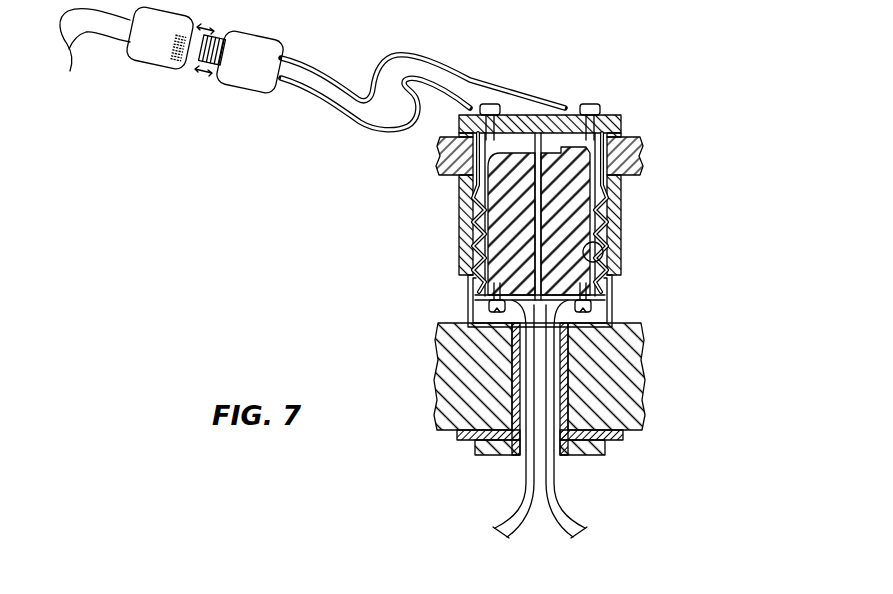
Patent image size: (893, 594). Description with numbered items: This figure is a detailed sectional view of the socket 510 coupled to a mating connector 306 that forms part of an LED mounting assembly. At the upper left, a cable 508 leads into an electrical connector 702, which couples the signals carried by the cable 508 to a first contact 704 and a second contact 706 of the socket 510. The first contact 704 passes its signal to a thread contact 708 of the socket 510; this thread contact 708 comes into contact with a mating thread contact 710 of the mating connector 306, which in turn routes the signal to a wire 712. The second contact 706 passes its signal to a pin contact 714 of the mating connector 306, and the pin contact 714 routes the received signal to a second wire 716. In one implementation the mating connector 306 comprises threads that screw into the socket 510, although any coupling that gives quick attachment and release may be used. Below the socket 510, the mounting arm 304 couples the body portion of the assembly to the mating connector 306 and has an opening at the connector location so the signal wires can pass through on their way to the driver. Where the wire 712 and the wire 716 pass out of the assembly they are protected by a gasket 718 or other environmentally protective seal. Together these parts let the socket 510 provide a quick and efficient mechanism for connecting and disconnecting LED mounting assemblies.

The cable 508 is at (110, 33).
The electrical connector 702 is at (231, 80).
The first contact 704 is at (496, 110).
The second contact 706 is at (597, 104).
The thread contact 708 is at (445, 165).
The socket 510 is at (458, 190).
The mating connector 306 is at (500, 240).
The pin contact 714 is at (546, 218).
The mating thread contact 710 is at (607, 257).
The mounting arm 304 is at (643, 374).
The wire 712 is at (508, 505).
The wire 716 is at (546, 531).
The gasket 718 is at (574, 455).